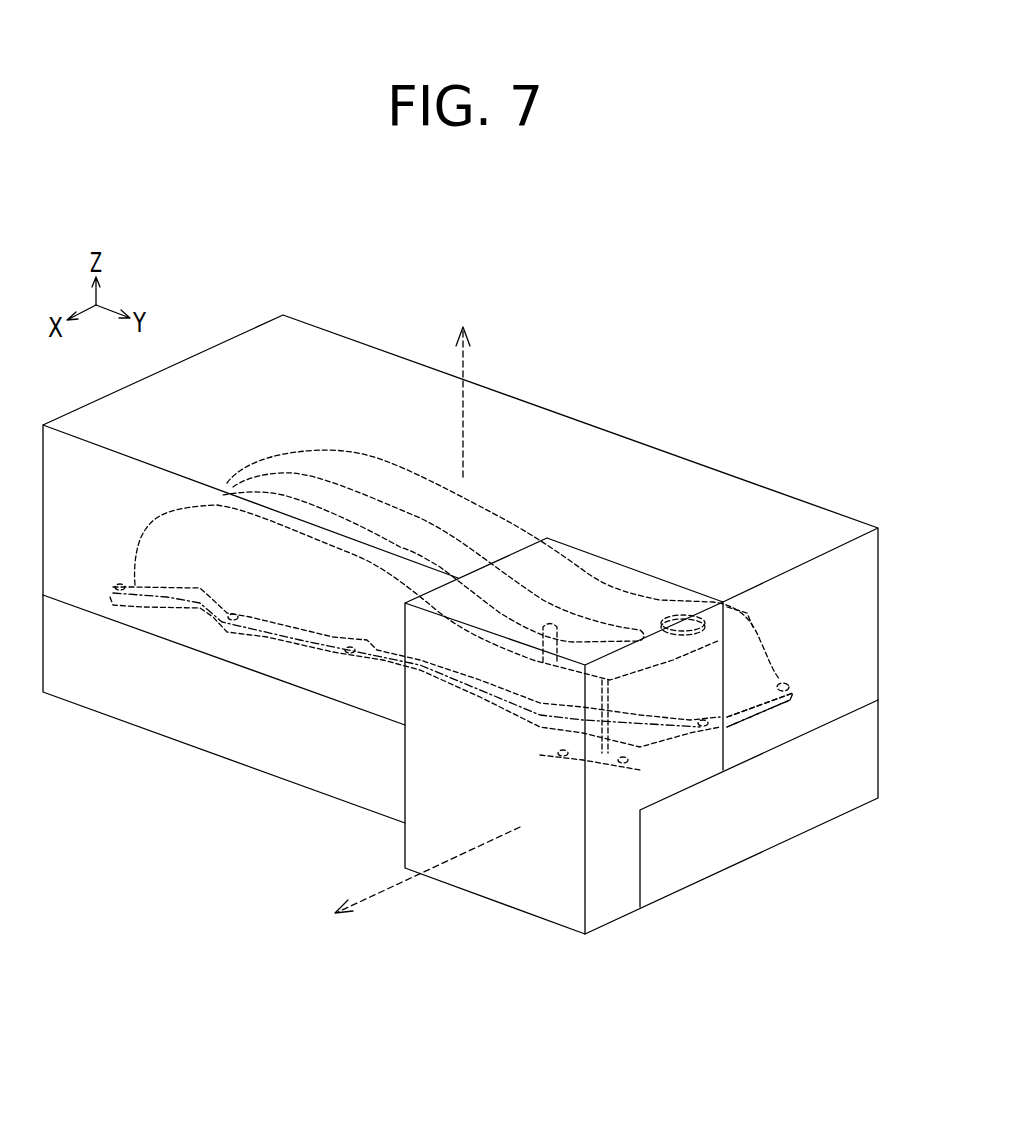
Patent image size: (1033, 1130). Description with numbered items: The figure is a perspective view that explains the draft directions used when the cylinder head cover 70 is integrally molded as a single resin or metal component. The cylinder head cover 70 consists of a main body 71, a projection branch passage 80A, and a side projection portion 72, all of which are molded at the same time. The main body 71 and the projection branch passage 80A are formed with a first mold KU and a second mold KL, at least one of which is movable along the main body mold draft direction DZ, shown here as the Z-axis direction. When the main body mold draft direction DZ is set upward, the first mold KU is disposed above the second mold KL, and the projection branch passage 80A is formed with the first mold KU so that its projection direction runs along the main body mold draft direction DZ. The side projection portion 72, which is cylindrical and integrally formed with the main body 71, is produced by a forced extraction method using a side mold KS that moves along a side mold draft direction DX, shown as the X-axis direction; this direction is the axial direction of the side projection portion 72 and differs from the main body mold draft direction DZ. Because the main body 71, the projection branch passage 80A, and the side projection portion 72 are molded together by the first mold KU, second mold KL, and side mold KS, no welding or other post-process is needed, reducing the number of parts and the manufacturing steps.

The first mold KU is at (247, 390).
The second mold KL is at (195, 707).
The side mold KS is at (528, 870).
The main body mold draft direction DZ is at (462, 387).
The side mold draft direction DX is at (411, 881).
The projection branch passage 80A is at (560, 627).
The cylinder head cover 70 is at (697, 828).
The main body 71 is at (747, 677).
The side projection portion 72 is at (618, 722).